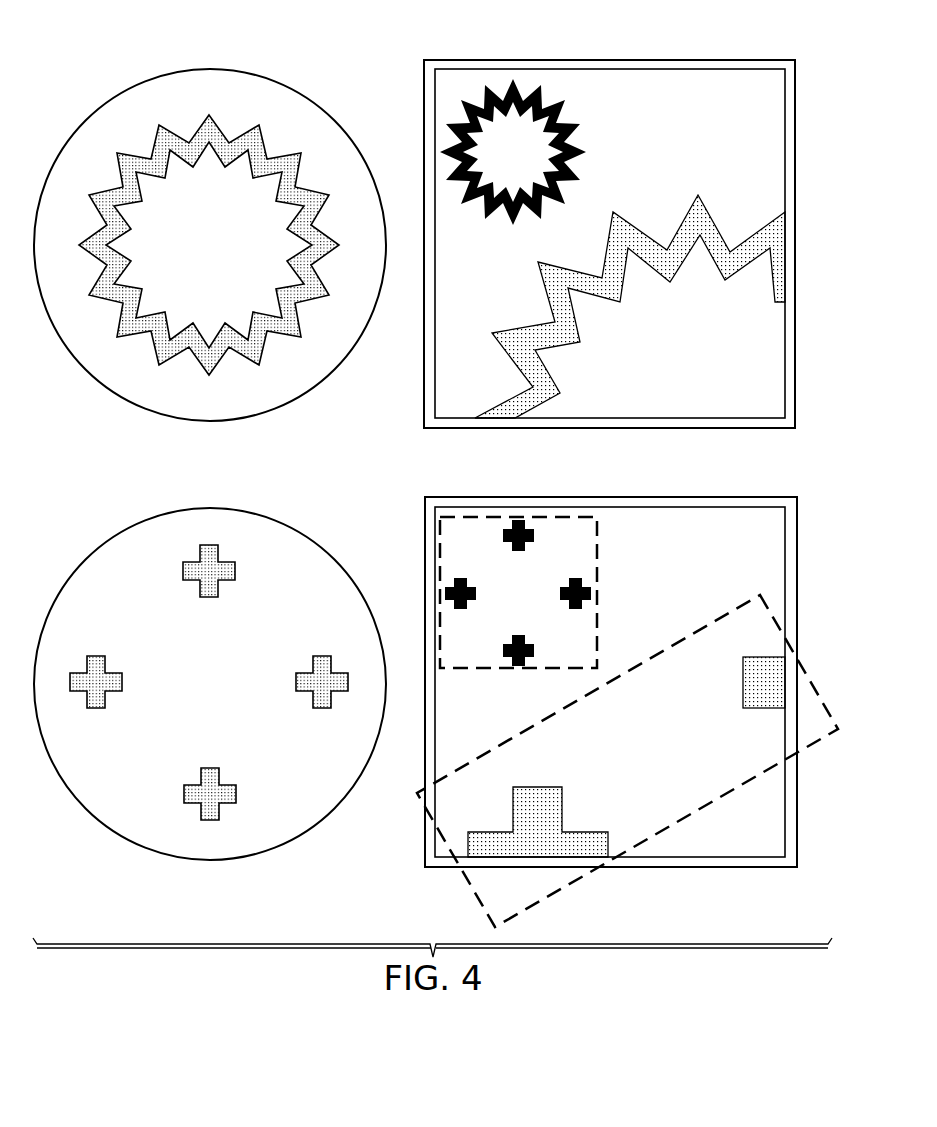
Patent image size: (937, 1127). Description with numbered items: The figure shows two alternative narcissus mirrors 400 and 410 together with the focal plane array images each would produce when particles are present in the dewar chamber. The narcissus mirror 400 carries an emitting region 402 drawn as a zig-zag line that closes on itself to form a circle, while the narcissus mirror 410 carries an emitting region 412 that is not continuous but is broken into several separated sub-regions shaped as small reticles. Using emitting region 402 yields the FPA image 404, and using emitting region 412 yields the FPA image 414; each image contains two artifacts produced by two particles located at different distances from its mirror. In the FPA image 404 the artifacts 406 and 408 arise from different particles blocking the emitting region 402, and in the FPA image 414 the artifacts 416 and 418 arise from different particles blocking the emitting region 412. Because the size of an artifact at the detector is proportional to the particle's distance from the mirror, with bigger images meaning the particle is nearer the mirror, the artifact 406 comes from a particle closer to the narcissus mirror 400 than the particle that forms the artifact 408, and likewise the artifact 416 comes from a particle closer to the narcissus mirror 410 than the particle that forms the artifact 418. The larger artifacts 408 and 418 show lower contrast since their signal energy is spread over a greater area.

The narcissus mirror 400 is at (205, 68).
The emitting region 402 is at (128, 153).
The FPA image 404 is at (608, 60).
The artifact 406 is at (575, 114).
The artifact 408 is at (679, 226).
The narcissus mirror 410 is at (210, 508).
The emitting region 412 is at (96, 657).
The FPA image 414 is at (610, 496).
The artifact 416 is at (597, 594).
The artifact 418 is at (468, 882).